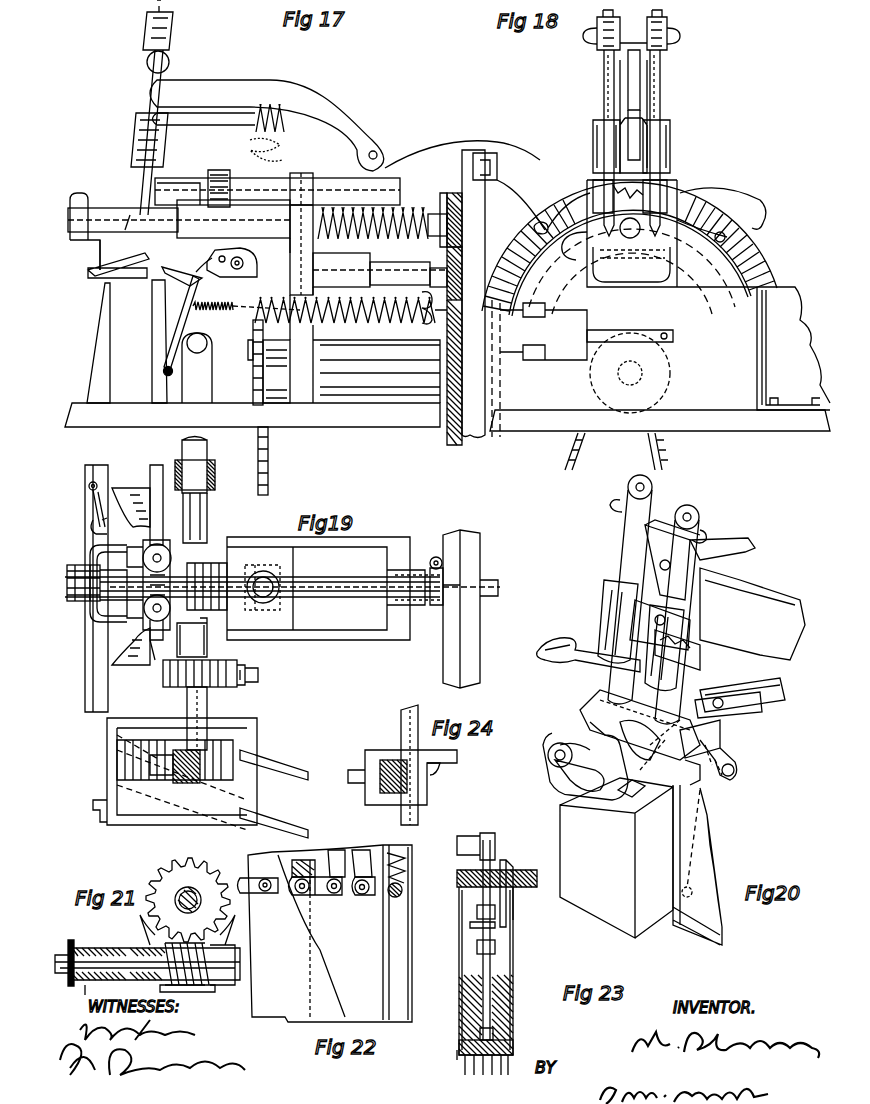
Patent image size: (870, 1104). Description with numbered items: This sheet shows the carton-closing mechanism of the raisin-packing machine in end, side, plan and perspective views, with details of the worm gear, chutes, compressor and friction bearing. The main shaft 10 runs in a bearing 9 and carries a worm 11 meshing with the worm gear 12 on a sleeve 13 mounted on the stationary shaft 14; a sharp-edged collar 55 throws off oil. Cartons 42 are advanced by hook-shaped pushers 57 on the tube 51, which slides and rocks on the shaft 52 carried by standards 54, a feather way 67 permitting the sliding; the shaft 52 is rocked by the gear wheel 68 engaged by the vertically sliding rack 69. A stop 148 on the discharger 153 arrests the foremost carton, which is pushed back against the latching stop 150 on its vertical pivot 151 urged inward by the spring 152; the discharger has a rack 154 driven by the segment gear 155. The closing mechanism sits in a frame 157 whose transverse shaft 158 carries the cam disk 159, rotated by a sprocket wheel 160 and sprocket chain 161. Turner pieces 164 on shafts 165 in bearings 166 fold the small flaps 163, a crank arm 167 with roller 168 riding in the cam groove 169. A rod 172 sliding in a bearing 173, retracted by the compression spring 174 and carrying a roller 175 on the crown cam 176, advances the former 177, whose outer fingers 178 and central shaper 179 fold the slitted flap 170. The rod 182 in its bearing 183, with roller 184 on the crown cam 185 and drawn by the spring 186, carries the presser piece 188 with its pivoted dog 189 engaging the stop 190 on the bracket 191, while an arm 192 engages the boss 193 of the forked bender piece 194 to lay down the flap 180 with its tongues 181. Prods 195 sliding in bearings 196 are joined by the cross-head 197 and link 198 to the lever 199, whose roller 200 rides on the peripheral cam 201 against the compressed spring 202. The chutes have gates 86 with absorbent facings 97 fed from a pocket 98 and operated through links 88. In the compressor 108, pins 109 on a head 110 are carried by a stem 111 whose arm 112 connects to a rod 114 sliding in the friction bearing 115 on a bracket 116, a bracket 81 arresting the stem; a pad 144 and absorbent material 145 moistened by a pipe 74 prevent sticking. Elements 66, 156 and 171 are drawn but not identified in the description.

In FIG. 21, the bearing 9 is at (153, 945).
In FIG. 21, the main shaft 10 is at (95, 963).
In FIG. 21, the worm 11 is at (208, 990).
In FIG. 21, the worm gear 12 is at (188, 900).
In FIG. 21, the sleeve 13 is at (178, 906).
In FIG. 21, the stationary shaft 14 is at (198, 897).
In FIG. 20, the carton 42 is at (616, 858).
In FIG. 19, the tube or hollow shaft 51 is at (207, 446).
In FIG. 19, the forward shaft 52 is at (207, 540).
In FIG. 19, the standards 54 is at (210, 640).
In FIG. 21, the collar 55 is at (72, 945).
In FIG. 19, the hook-shaped pushers 57 is at (215, 473).
In FIG. 19, the rod 66 is at (207, 499).
In FIG. 19, the feather way 67 is at (207, 513).
In FIG. 19, the gear wheel 68 is at (230, 685).
In FIG. 19, the vertically sliding rack 69 is at (258, 690).
In FIG. 23, the pipe 74 is at (508, 920).
In FIG. 23, the bracket 81 is at (470, 925).
In FIG. 22, the gates 86 is at (325, 933).
In FIG. 22, the links 88 is at (336, 862).
In FIG. 22, the facings 97 is at (383, 962).
In FIG. 22, the pocket 98 is at (407, 858).
In FIG. 23, the compressor 108 is at (462, 982).
In FIG. 23, the pins 109 is at (505, 1073).
In FIG. 23, the head 110 is at (513, 1047).
In FIG. 23, the stem 111 is at (483, 968).
In FIG. 23, the arm 112 is at (470, 843).
In FIG. 24, the rod 114 is at (401, 722).
In FIG. 24, the friction bearing 115 is at (366, 758).
In FIG. 24, the bracket 116 is at (390, 795).
In FIG. 23, the pad 144 is at (460, 1063).
In FIG. 23, the absorbent material 145 is at (513, 1004).
In FIG. 19, the stop 148 is at (93, 800).
In FIG. 19, the latching stop 150 is at (92, 505).
In FIG. 18, the vertical pivot 151 is at (528, 365).
In FIG. 19, the vertical pivot 151 is at (89, 485).
In FIG. 19, the spring 152 is at (92, 528).
In FIG. 19, the discharger 153 is at (197, 830).
In FIG. 19, the rack 154 is at (233, 748).
In FIG. 19, the segment gear 155 is at (150, 765).
In FIG. 19, the rods 156 is at (275, 818).
In FIG. 17, the frame 157 is at (292, 371).
In FIG. 17, the horizontal transverse shaft 158 is at (253, 360).
In FIG. 17, the cam disk 159 is at (485, 190).
In FIG. 19, the cam disk 159 is at (450, 660).
In FIG. 17, the sprocket wheel 160 is at (255, 381).
In FIG. 17, the sprocket chain 161 is at (279, 461).
In FIG. 18, the sprocket chain 161 is at (568, 456).
In FIG. 20, the small plain flaps 163 is at (690, 782).
In FIG. 17, the turner pieces 164 is at (131, 220).
In FIG. 18, the turner pieces 164 is at (735, 205).
In FIG. 19, the turner pieces 164 is at (135, 490).
In FIG. 20, the turner pieces 164 is at (553, 640).
In FIG. 17, the shafts 165 is at (200, 183).
In FIG. 20, the shafts 165 is at (700, 640).
In FIG. 17, the bearings 166 is at (277, 188).
In FIG. 17, the crank arm 167 is at (443, 193).
In FIG. 19, the crank arm 167 is at (434, 558).
In FIG. 17, the roller 168 is at (458, 200).
In FIG. 17, the cam groove 169 is at (548, 230).
In FIG. 20, the slitted flap 170 is at (628, 795).
In FIG. 23, the nut 171 is at (477, 912).
In FIG. 17, the rod 172 is at (133, 213).
In FIG. 20, the rod 172 is at (615, 705).
In FIG. 17, the bearing 173 is at (179, 219).
In FIG. 17, the compression spring 174 is at (410, 210).
In FIG. 17, the roller 175 is at (455, 223).
In FIG. 18, the crown cam 176 is at (712, 237).
In FIG. 17, the former 177 is at (88, 250).
In FIG. 20, the former 177 is at (560, 776).
In FIG. 17, the outer fingers 178 is at (117, 273).
In FIG. 19, the outer fingers 178 is at (118, 620).
In FIG. 20, the outer fingers 178 is at (585, 779).
In FIG. 17, the central shaper 179 is at (108, 285).
In FIG. 19, the central shaper 179 is at (115, 600).
In FIG. 20, the central shaper 179 is at (600, 760).
In FIG. 20, the fourth flap 180 is at (630, 755).
In FIG. 20, the tongues 181 is at (690, 745).
In FIG. 17, the rod 182 is at (400, 273).
In FIG. 20, the rod 182 is at (762, 705).
In FIG. 17, the bearing 183 is at (380, 270).
In FIG. 20, the bearing 183 is at (785, 689).
In FIG. 17, the roller 184 is at (436, 284).
In FIG. 18, the crown cam 185 is at (772, 240).
In FIG. 17, the spring 186 is at (368, 315).
In FIG. 17, the presser piece 188 is at (197, 267).
In FIG. 20, the presser piece 188 is at (630, 730).
In FIG. 17, the pivoted dog 189 is at (212, 256).
In FIG. 20, the pivoted dog 189 is at (742, 595).
In FIG. 17, the stop 190 is at (198, 282).
In FIG. 20, the stop 190 is at (725, 726).
In FIG. 20, the bracket 191 is at (736, 754).
In FIG. 17, the arm 192 is at (240, 305).
In FIG. 20, the arm 192 is at (735, 775).
In FIG. 17, the boss 193 is at (205, 310).
In FIG. 17, the forked bender piece 194 is at (186, 312).
In FIG. 20, the forked bender piece 194 is at (705, 800).
In FIG. 18, the prods 195 is at (662, 92).
In FIG. 20, the prods 195 is at (628, 558).
In FIG. 18, the bearings 196 is at (672, 133).
In FIG. 20, the bearings 196 is at (608, 600).
In FIG. 18, the cross-head 197 is at (670, 30).
In FIG. 20, the cross-head 197 is at (700, 517).
In FIG. 18, the link 198 is at (638, 73).
In FIG. 20, the link 198 is at (650, 578).
In FIG. 17, the lever 199 is at (267, 125).
In FIG. 18, the lever 199 is at (640, 125).
In FIG. 20, the lever 199 is at (722, 549).
In FIG. 17, the roller 200 is at (490, 185).
In FIG. 17, the peripheral cam 201 is at (493, 197).
In FIG. 18, the peripheral cam 201 is at (690, 195).
In FIG. 17, the compressed spring 202 is at (282, 105).